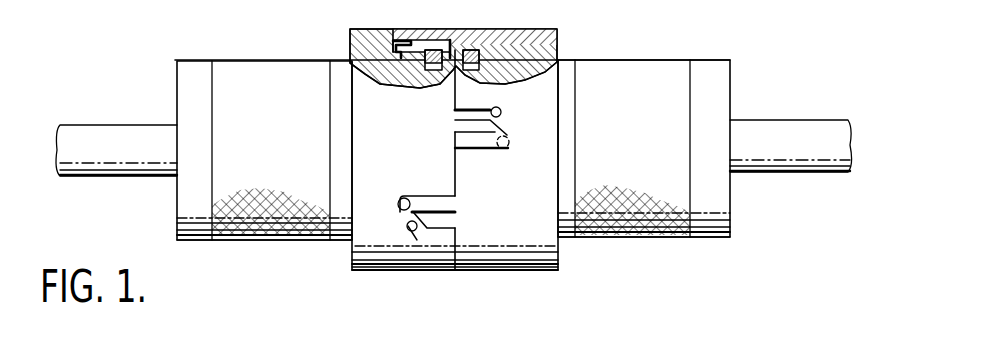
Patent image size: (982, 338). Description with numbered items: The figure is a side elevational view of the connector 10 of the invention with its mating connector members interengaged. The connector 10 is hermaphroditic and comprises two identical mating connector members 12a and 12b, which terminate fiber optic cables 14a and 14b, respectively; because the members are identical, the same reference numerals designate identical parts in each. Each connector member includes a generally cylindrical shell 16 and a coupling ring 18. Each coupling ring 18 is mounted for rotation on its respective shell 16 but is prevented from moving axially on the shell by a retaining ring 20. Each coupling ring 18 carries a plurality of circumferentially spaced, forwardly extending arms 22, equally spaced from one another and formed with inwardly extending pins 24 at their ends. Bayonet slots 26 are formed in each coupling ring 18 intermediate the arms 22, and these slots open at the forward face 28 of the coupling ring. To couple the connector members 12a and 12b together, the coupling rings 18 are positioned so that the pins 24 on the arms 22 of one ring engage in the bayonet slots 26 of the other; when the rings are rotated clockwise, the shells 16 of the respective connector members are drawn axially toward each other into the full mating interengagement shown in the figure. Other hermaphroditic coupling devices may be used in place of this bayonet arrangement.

The connector 10 is at (572, 23).
The connector member 12a is at (652, 250).
The connector member 12b is at (292, 250).
The fiber optic cable 14a is at (773, 122).
The fiber optic cable 14b is at (106, 106).
The shell 16 is at (178, 217).
The coupling ring 18 is at (371, 260).
The retaining ring 20 is at (433, 52).
The arm 22 is at (416, 36).
The pin 24 is at (400, 59).
The bayonet slot 26 is at (495, 113).
The forward face 28 is at (447, 196).